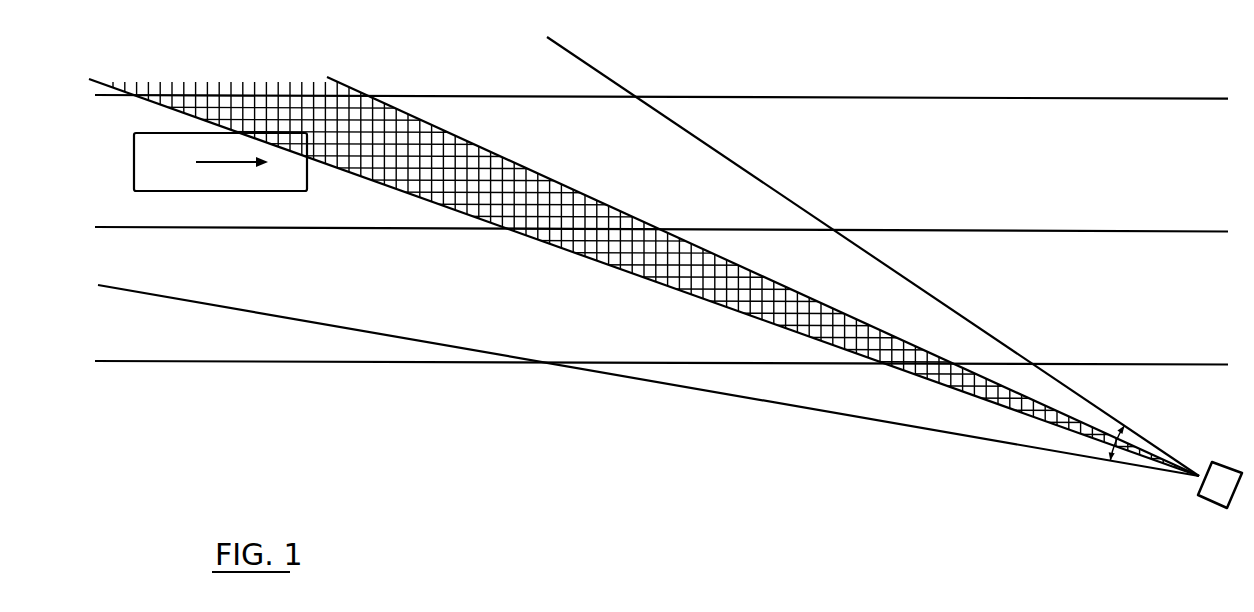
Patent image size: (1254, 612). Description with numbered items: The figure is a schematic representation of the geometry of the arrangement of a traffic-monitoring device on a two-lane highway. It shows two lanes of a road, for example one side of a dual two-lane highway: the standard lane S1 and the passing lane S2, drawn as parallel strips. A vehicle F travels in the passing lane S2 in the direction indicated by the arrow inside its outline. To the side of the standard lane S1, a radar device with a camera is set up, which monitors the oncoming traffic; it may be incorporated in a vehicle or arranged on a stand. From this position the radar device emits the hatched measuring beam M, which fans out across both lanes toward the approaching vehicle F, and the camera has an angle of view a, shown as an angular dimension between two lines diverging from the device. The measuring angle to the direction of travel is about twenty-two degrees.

The vehicle F is at (134, 163).
The measuring beam M is at (697, 296).
The standard lane S1 is at (661, 318).
The passing lane S2 is at (661, 163).
The angle of view a is at (1108, 463).